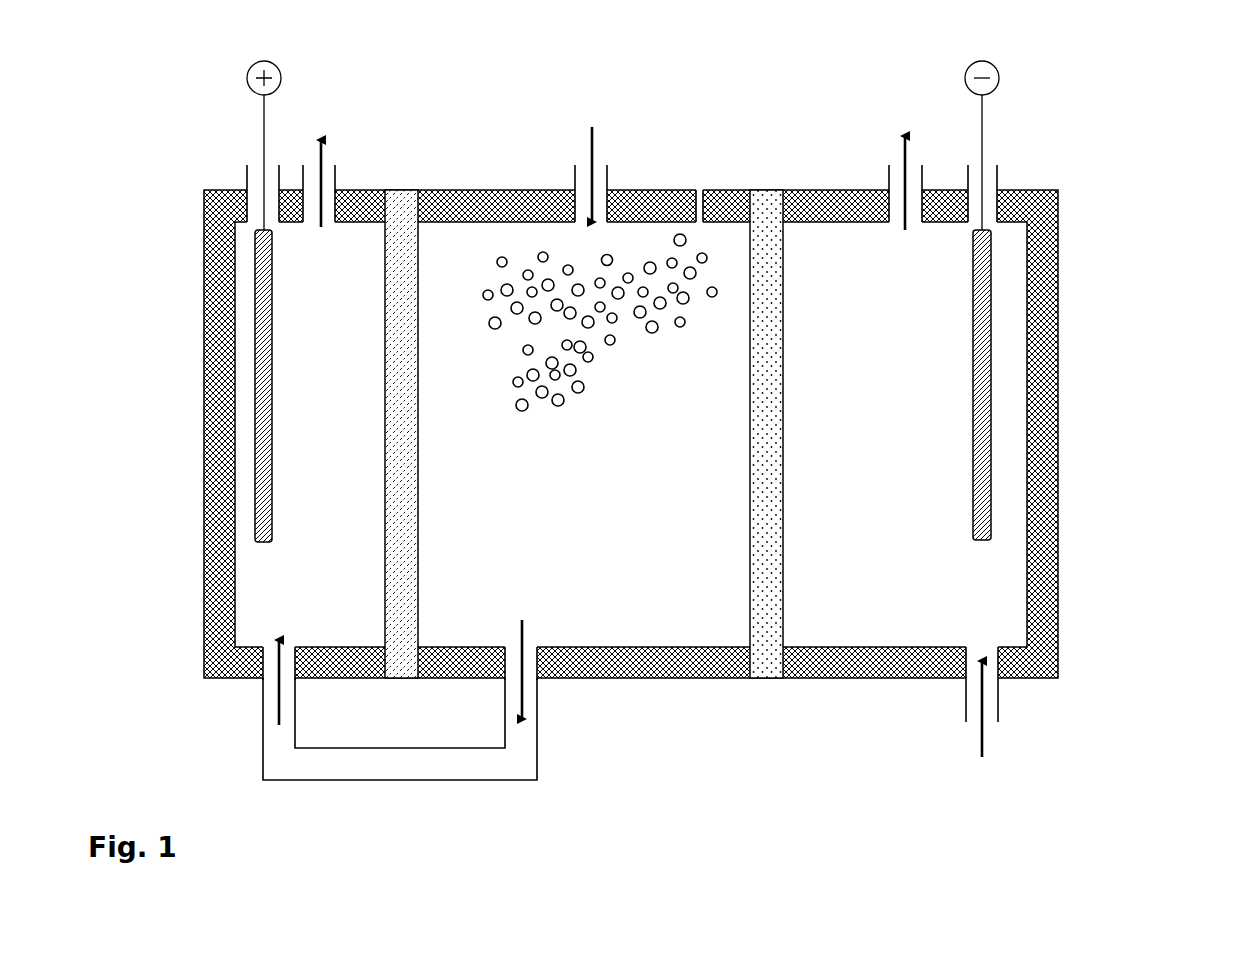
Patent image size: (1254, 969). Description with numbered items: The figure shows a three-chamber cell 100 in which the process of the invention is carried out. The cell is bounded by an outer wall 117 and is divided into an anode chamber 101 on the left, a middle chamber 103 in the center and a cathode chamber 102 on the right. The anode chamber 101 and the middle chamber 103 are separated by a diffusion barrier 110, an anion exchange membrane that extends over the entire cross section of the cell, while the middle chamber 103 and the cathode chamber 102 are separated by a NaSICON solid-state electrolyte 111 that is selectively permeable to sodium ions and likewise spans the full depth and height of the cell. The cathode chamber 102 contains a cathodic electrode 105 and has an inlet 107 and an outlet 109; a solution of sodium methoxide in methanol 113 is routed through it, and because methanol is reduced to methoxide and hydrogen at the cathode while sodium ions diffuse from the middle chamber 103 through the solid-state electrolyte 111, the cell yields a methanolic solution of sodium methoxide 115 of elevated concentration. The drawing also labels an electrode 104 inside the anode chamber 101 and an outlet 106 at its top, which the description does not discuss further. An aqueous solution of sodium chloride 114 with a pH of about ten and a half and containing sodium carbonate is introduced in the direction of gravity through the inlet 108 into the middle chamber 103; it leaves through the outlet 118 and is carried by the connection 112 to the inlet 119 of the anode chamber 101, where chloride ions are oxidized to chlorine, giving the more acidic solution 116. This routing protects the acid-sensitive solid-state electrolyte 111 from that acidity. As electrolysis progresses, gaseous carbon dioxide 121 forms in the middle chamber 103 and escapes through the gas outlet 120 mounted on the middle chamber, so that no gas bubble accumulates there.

The three-chamber cell 100 is at (1087, 185).
The anode chamber 101 is at (310, 434).
The cathode chamber 102 is at (905, 434).
The middle chamber 103 is at (584, 434).
The anode 104 is at (282, 320).
The cathodic electrode 105 is at (965, 307).
The anode gas outlet 106 is at (337, 177).
The inlet of the cathode chamber 107 is at (1010, 705).
The inlet of the middle chamber 108 is at (615, 182).
The outlet of the cathode chamber 109 is at (882, 177).
The diffusion barrier 110 is at (425, 320).
The NaSICON solid-state electrolyte 111 is at (733, 480).
The connection 112 is at (410, 788).
The solution of sodium methoxide in methanol 113 is at (972, 737).
The aqueous solution of sodium chloride 114 is at (582, 152).
The methanolic solution of sodium methoxide 115 is at (910, 147).
The solution resulting in the anode chamber 116 is at (315, 112).
The outer wall 117 is at (672, 685).
The outlet of the middle chamber 118 is at (550, 698).
The inlet of the anode chamber 119 is at (245, 690).
The gas outlet 120 is at (693, 180).
The gaseous carbon dioxide 121 is at (632, 327).